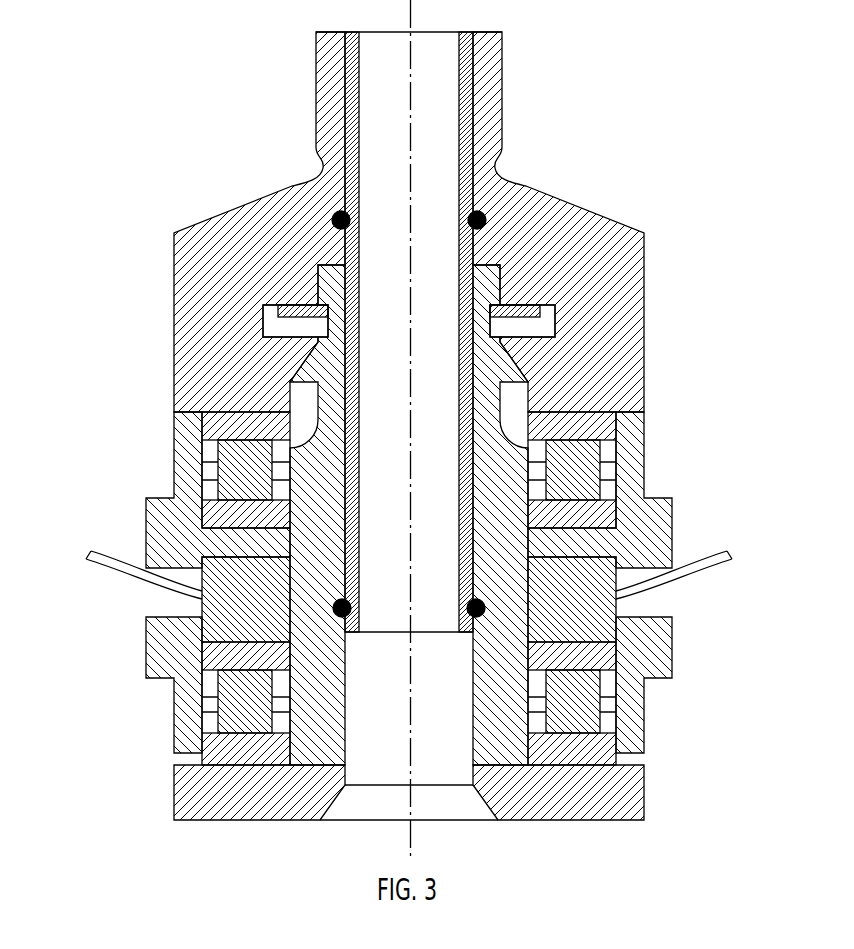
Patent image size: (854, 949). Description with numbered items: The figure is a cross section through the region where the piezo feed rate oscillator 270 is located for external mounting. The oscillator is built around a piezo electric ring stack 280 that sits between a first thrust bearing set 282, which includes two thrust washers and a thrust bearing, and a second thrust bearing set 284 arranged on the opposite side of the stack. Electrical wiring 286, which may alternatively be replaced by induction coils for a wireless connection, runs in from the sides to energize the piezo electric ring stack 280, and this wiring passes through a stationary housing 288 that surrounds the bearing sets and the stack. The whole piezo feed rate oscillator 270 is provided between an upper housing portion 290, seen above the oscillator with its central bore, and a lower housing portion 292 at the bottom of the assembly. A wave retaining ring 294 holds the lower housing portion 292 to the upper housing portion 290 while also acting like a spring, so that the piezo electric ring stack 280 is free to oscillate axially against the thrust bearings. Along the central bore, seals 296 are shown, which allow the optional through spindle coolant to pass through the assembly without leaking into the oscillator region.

The piezo feed rate oscillator 270 is at (664, 479).
The piezo electric ring stack 280 is at (240, 595).
The first thrust bearing set 282 is at (214, 469).
The second thrust bearing set 284 is at (195, 705).
The electrical wiring 286 is at (113, 583).
The stationary housing 288 is at (146, 500).
The upper housing portion 290 is at (323, 118).
The lower housing portion 292 is at (192, 808).
The wave retaining ring 294 is at (283, 312).
The seals 296 is at (336, 215).